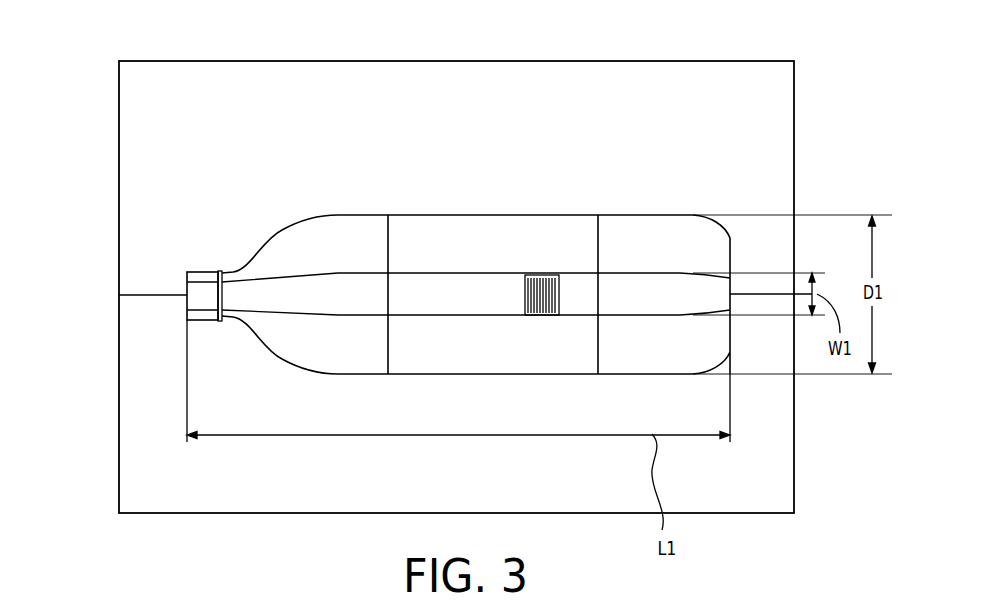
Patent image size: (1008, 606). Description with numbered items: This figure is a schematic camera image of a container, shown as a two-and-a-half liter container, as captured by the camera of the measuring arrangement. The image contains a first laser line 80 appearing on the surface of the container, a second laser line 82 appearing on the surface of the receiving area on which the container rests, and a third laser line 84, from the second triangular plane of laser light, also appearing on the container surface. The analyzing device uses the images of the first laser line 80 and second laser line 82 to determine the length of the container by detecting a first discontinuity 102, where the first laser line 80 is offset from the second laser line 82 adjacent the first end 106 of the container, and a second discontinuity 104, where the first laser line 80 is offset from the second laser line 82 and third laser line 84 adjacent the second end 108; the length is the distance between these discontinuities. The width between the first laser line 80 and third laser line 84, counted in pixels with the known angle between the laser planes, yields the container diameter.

The first laser line 80 is at (455, 275).
The second laser line 82 is at (135, 296).
The third laser line 84 is at (375, 313).
The first discontinuity 102 is at (173, 282).
The second discontinuity 104 is at (749, 285).
The first end 106 is at (210, 248).
The second end 108 is at (726, 200).